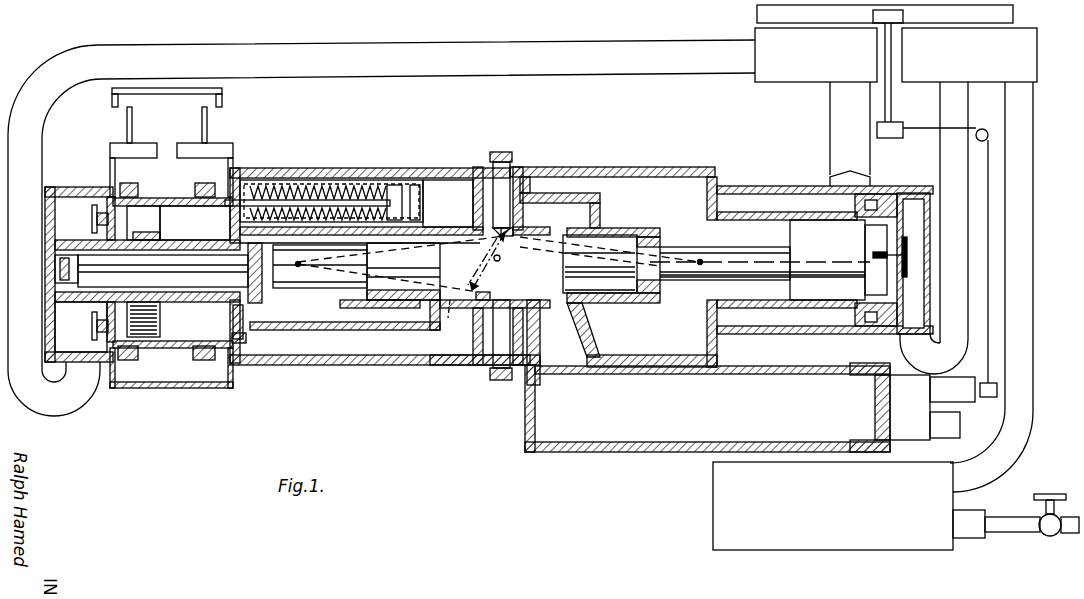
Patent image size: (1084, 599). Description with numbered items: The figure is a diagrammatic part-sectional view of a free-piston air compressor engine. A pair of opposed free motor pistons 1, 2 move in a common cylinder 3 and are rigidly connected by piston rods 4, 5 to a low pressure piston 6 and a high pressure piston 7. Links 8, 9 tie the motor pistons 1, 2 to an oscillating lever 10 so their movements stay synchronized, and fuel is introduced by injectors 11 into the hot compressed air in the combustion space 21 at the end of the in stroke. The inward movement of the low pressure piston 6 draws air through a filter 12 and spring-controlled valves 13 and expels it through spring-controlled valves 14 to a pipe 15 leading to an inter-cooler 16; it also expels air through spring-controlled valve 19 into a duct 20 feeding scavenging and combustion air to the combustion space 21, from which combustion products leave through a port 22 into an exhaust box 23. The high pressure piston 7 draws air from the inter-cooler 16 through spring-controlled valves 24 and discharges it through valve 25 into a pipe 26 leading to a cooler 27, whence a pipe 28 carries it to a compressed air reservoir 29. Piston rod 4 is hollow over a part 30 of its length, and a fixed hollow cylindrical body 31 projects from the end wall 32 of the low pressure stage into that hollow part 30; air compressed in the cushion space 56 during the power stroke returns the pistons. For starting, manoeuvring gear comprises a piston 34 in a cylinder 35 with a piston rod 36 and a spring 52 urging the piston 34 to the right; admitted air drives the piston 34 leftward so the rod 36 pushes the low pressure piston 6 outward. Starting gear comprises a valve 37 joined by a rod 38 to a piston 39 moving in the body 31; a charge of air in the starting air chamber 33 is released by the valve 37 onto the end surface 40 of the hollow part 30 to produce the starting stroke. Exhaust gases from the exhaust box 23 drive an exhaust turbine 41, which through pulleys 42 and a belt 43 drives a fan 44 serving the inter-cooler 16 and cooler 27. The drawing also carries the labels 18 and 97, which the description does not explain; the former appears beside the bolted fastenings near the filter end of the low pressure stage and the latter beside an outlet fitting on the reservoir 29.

The free-piston 1 is at (403, 271).
The free-piston 2 is at (568, 258).
The common cylinder 3 is at (455, 227).
The piston rod 4 is at (302, 282).
The piston rod 5 is at (696, 286).
The low pressure piston 6 is at (153, 223).
The high pressure piston 7 is at (791, 208).
The link 8 is at (451, 318).
The link 9 is at (684, 250).
The oscillating lever 10 is at (496, 261).
The injector 11 is at (507, 232).
The filter 12 is at (171, 142).
The spring-controlled valve 13 is at (130, 186).
The spring-controlled valve 14 is at (92, 217).
The pipe 15 is at (17, 400).
The inter-cooler 16 is at (816, 55).
The bolt 18 is at (232, 172).
The spring-controlled valve 19 is at (245, 333).
The duct 20 is at (296, 350).
The combustion space 21 is at (490, 268).
The port 22 is at (558, 310).
The exhaust box 23 is at (707, 408).
The spring-controlled valve 24 is at (885, 197).
The valve 25 is at (901, 263).
The pipe 26 is at (950, 143).
The cooler 27 is at (969, 55).
The pipe 28 is at (1004, 470).
The compressed air reservoir 29 is at (833, 506).
The hollow part 30 is at (159, 321).
The fixed hollow cylindrical body 31 is at (81, 325).
The end wall 32 is at (86, 188).
The starting air chamber 33 is at (151, 271).
The piston 34 is at (395, 185).
The cylinder 35 is at (305, 190).
The piston rod 36 is at (272, 190).
The valve 37 is at (222, 303).
The rod 38 is at (197, 265).
The piston 39 is at (55, 273).
The end surface 40 is at (390, 264).
The exhaust turbine 41 is at (905, 398).
The pulley 42 is at (977, 131).
The belt 43 is at (942, 228).
The fan 44 is at (1013, 14).
The spring 52 is at (340, 190).
The cushion space 56 is at (266, 300).
The outlet valve 97 is at (997, 532).